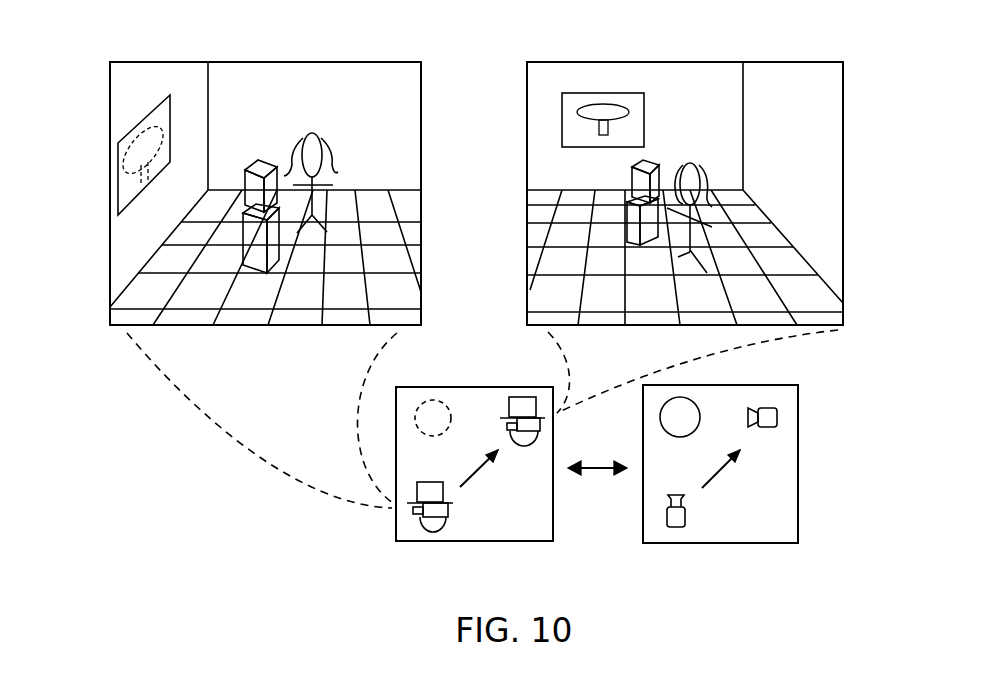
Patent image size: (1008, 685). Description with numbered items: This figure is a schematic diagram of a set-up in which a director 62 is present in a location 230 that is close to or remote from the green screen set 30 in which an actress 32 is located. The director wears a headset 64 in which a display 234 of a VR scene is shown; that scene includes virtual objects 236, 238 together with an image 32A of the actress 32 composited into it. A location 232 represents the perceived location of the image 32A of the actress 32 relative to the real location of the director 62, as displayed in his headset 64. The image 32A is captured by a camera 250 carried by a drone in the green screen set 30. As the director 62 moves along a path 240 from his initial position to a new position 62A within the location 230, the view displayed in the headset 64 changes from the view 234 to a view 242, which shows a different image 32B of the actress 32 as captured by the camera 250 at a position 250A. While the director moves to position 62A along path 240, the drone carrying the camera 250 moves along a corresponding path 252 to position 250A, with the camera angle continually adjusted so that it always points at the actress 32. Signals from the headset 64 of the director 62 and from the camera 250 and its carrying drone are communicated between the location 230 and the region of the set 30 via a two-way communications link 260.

The display 234 is at (172, 62).
The virtual object 236 is at (117, 170).
The virtual object 238 is at (250, 167).
The image of the actress 32A is at (317, 133).
The image of the actress 32B is at (688, 163).
The view 242 is at (783, 62).
The location 232 is at (442, 401).
The new position 62A is at (524, 397).
The director 62 is at (420, 528).
The headset 64 is at (452, 517).
The path 240 is at (468, 470).
The location 230 is at (553, 505).
The two-way communications link 260 is at (599, 485).
The actress 32 is at (695, 403).
The green screen set 30 is at (798, 407).
The position 250A is at (770, 425).
The path 252 is at (718, 475).
The camera 250 is at (687, 525).